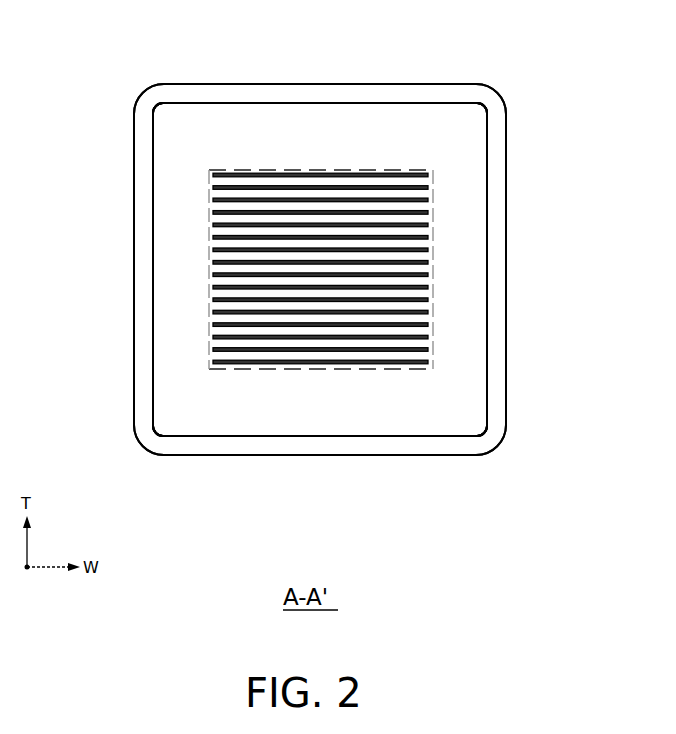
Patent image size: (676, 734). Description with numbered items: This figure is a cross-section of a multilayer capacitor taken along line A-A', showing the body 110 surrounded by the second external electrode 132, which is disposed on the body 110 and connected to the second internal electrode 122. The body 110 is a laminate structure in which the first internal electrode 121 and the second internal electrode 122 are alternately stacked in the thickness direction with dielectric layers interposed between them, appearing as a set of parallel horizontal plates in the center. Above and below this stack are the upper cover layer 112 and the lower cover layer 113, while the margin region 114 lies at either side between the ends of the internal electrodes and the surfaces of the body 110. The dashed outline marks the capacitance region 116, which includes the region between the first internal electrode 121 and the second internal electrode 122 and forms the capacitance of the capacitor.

The body 110 is at (442, 85).
The upper cover layer 112 is at (400, 115).
The lower cover layer 113 is at (362, 405).
The margin region 114 is at (467, 210).
The capacitance region 116 is at (340, 152).
The first internal electrode 121 is at (227, 176).
The second internal electrode 122 is at (272, 189).
The second external electrode 132 is at (500, 133).